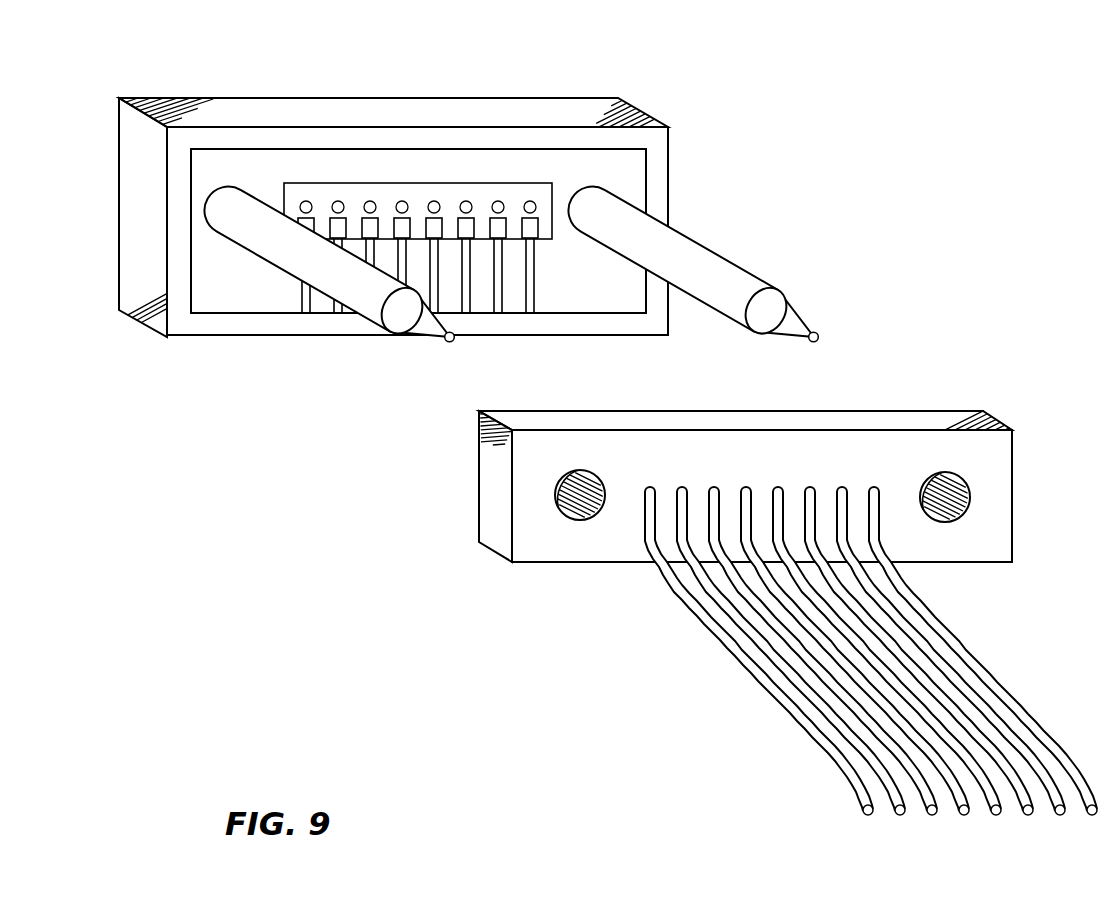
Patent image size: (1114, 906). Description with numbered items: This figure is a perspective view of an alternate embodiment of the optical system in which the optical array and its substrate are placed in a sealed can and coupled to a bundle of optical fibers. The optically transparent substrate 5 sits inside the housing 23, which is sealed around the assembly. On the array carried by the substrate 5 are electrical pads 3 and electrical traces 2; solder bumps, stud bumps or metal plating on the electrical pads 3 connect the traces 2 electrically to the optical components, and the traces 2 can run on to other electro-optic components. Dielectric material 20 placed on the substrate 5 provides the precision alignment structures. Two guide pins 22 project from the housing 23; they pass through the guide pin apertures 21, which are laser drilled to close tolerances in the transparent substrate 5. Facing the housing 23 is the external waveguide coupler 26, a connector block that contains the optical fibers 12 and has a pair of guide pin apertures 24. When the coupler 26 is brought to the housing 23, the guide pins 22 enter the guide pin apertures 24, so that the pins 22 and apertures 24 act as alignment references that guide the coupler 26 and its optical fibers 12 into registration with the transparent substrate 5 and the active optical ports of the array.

The electrical traces 2 is at (536, 290).
The electrical pads 3 is at (538, 228).
The optically transparent substrate 5 is at (312, 130).
The optical fibers 12 is at (683, 592).
The dielectric material 20 is at (358, 160).
The guide pin apertures 21 is at (206, 217).
The guide pins 22 is at (747, 273).
The housing 23 is at (255, 103).
The guide pin apertures 24 is at (572, 518).
The external waveguide coupler 26 is at (882, 415).